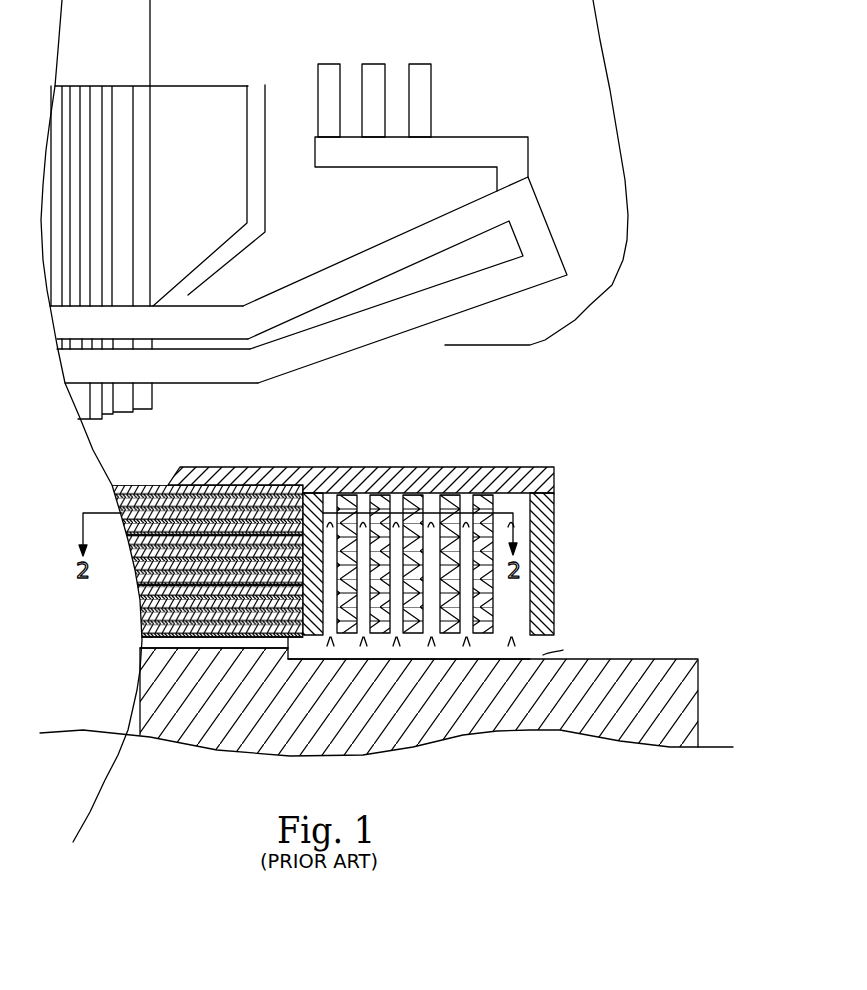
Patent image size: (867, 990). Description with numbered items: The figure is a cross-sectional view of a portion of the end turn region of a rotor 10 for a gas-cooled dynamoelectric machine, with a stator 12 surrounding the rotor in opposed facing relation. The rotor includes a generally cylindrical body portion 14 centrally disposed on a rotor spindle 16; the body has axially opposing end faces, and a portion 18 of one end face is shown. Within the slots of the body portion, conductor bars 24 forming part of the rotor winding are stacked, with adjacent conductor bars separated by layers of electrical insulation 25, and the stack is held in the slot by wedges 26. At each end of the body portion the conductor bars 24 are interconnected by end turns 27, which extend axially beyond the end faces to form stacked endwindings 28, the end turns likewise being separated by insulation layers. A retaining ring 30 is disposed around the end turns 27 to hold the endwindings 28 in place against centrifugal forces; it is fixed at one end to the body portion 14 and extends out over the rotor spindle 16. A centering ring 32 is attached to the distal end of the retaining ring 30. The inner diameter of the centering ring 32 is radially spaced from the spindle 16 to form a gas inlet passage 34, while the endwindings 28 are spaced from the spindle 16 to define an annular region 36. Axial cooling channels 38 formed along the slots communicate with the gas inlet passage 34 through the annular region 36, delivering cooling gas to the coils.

The rotor 10 is at (425, 521).
The stator 12 is at (645, 130).
The body portion 14 is at (142, 690).
The rotor spindle 16 is at (531, 718).
The end face portion 18 is at (283, 644).
The conductor bars 24 is at (140, 597).
The electrical insulation layers 25 is at (133, 565).
The wedges 26 is at (112, 490).
The end turns 27 is at (349, 634).
The endwindings 28 is at (486, 643).
The retaining ring 30 is at (371, 467).
The centering ring 32 is at (545, 546).
The gas inlet passage 34 is at (565, 641).
The annular region 36 is at (451, 641).
The axial cooling channels 38 is at (224, 643).